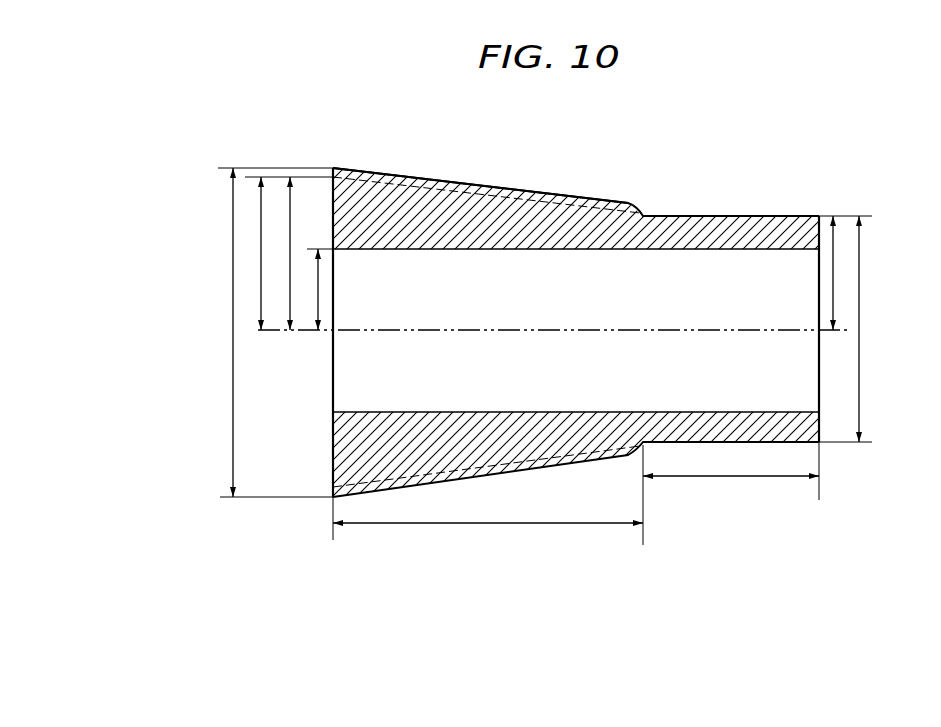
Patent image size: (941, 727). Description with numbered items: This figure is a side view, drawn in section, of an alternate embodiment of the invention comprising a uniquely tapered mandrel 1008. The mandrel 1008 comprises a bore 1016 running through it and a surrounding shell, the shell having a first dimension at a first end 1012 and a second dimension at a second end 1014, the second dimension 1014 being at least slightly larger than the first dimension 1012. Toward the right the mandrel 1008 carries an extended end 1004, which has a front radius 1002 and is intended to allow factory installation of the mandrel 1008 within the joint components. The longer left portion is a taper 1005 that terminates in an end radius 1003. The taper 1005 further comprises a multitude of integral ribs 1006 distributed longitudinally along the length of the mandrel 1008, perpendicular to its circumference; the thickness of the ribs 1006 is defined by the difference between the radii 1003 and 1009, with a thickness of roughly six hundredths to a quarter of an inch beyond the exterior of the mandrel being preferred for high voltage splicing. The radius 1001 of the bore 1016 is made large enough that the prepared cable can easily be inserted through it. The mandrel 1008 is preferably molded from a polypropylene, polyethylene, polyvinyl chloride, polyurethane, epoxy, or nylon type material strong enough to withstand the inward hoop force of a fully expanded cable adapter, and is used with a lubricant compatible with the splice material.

The uniquely tapered mandrel 1008 is at (589, 287).
The integral ribs 1006 is at (540, 193).
The bore 1016 is at (805, 375).
The second end 1014 is at (233, 340).
The end radius 1003 is at (261, 222).
The radius 1009 is at (290, 272).
The radius 1001 is at (318, 306).
The front radius 1002 is at (833, 283).
The first end 1012 is at (859, 343).
The taper 1005 is at (497, 523).
The extended end 1004 is at (730, 477).